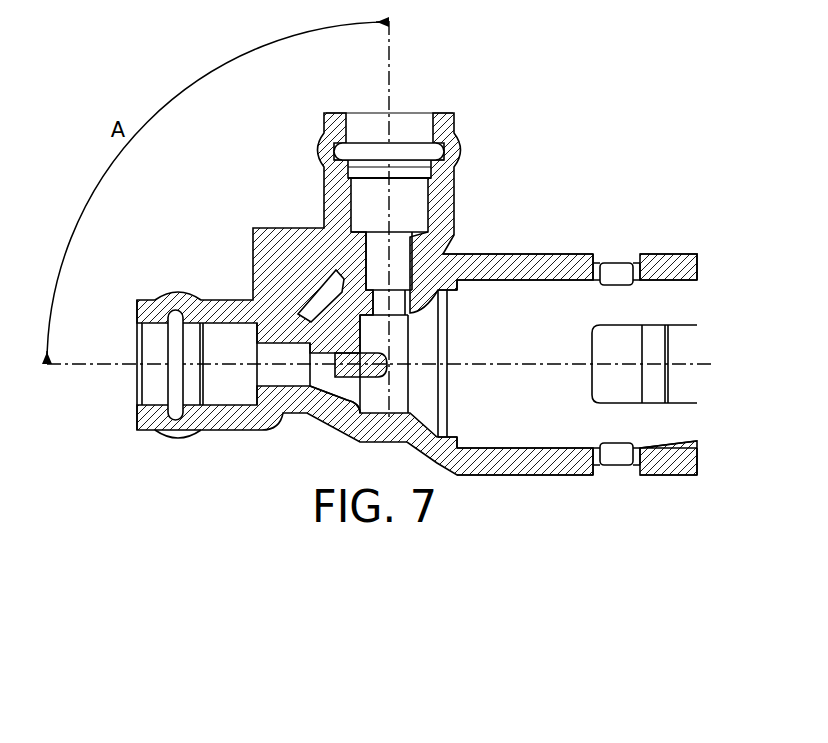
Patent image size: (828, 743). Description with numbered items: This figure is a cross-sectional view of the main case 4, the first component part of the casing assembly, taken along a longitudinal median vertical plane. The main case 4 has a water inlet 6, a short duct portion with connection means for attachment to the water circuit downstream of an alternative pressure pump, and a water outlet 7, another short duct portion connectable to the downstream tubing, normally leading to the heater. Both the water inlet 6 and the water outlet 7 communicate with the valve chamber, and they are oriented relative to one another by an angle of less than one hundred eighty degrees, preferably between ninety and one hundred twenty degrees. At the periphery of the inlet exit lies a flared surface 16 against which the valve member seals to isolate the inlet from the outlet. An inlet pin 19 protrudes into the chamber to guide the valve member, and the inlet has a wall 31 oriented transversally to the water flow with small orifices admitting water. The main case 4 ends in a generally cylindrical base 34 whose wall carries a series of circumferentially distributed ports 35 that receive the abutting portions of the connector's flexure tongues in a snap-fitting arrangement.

The main case 4 is at (585, 199).
The water inlet 6 is at (176, 297).
The water outlet 7 is at (423, 113).
The flared surface 16 is at (350, 402).
The inlet pin 19 is at (350, 353).
The wall 31 is at (313, 367).
The cylindrical base 34 is at (556, 465).
The ports 35 is at (620, 262).